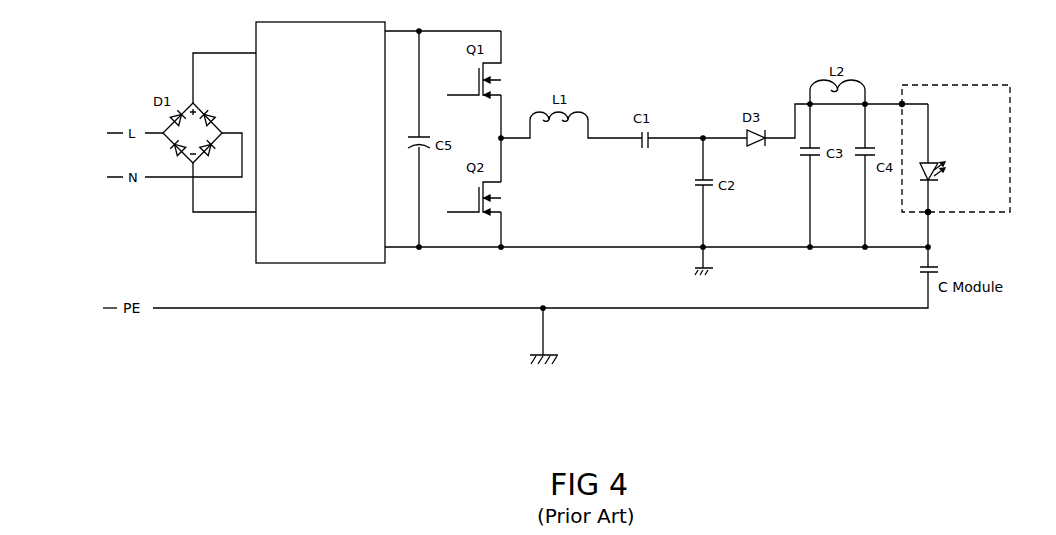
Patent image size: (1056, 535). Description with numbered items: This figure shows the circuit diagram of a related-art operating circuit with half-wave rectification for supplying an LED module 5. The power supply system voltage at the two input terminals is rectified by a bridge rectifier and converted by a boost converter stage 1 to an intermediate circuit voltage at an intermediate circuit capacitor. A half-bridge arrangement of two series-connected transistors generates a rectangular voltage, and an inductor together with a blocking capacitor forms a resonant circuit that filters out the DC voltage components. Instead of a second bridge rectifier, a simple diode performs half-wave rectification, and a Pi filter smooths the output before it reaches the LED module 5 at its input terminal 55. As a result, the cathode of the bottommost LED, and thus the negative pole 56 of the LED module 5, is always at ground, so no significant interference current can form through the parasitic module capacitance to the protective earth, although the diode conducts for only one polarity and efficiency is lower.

The power converter stage 1 is at (320, 142).
The LED module 5 is at (1003, 93).
The LED module input terminal 55 is at (902, 104).
The negative pole of the LED module 56 is at (930, 214).